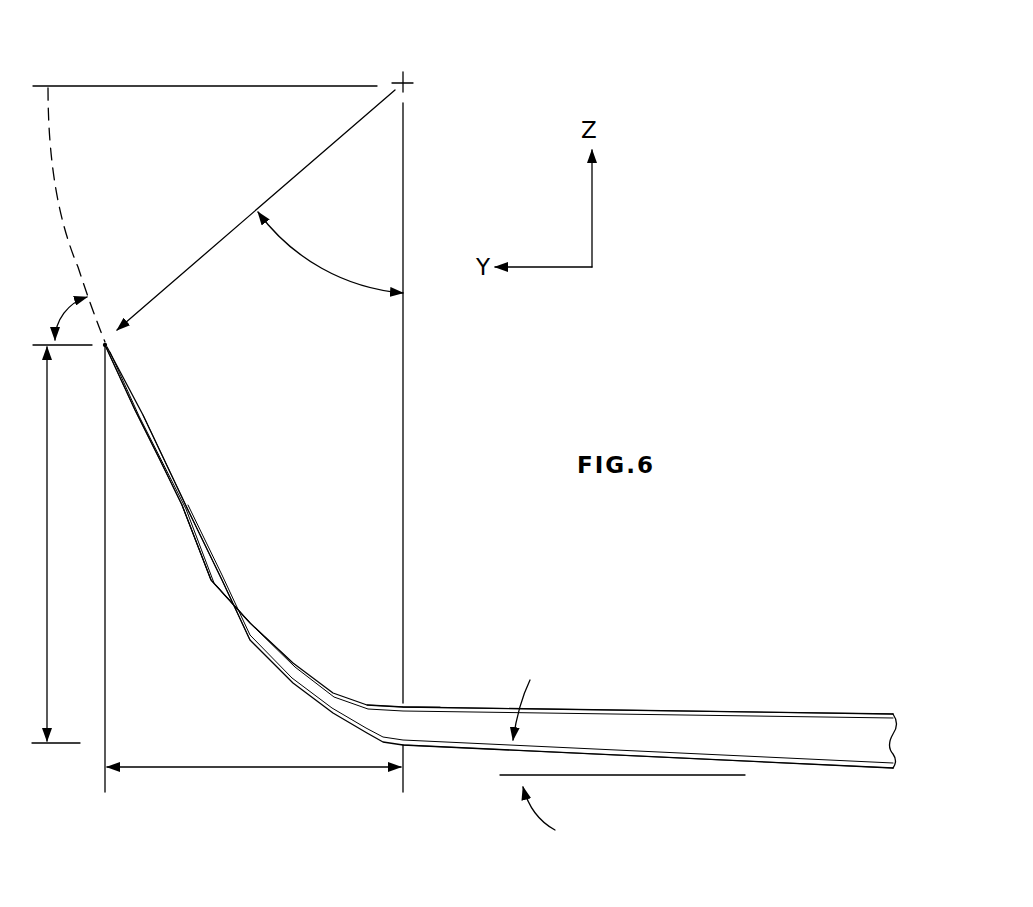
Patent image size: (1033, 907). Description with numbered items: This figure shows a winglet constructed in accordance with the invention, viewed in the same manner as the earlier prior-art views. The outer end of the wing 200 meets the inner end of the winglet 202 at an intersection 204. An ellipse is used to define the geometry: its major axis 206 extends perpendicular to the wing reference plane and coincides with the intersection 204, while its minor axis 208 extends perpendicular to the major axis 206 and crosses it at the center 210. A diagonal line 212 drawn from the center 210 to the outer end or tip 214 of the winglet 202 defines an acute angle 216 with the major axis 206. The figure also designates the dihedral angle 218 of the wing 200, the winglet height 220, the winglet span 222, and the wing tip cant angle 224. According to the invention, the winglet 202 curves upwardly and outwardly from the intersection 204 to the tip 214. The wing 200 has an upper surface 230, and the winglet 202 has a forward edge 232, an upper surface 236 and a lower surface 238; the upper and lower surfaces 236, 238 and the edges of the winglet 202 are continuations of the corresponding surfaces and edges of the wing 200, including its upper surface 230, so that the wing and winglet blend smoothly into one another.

The wing 200 is at (677, 703).
The winglet 202 is at (298, 653).
The intersection 204 is at (407, 705).
The major axis 206 is at (403, 398).
The minor axis 208 is at (242, 86).
The center 210 is at (405, 81).
The diagonal line 212 is at (212, 247).
The tip 214 is at (107, 345).
The acute angle 216 is at (325, 268).
The dihedral angle 218 is at (558, 750).
The winglet height 220 is at (47, 553).
The winglet span 222 is at (287, 770).
The wing tip cant angle 224 is at (82, 273).
The upper surface 230 is at (795, 718).
The forward edge 232 is at (787, 765).
The upper surface 236 is at (183, 505).
The lower surface 238 is at (227, 617).